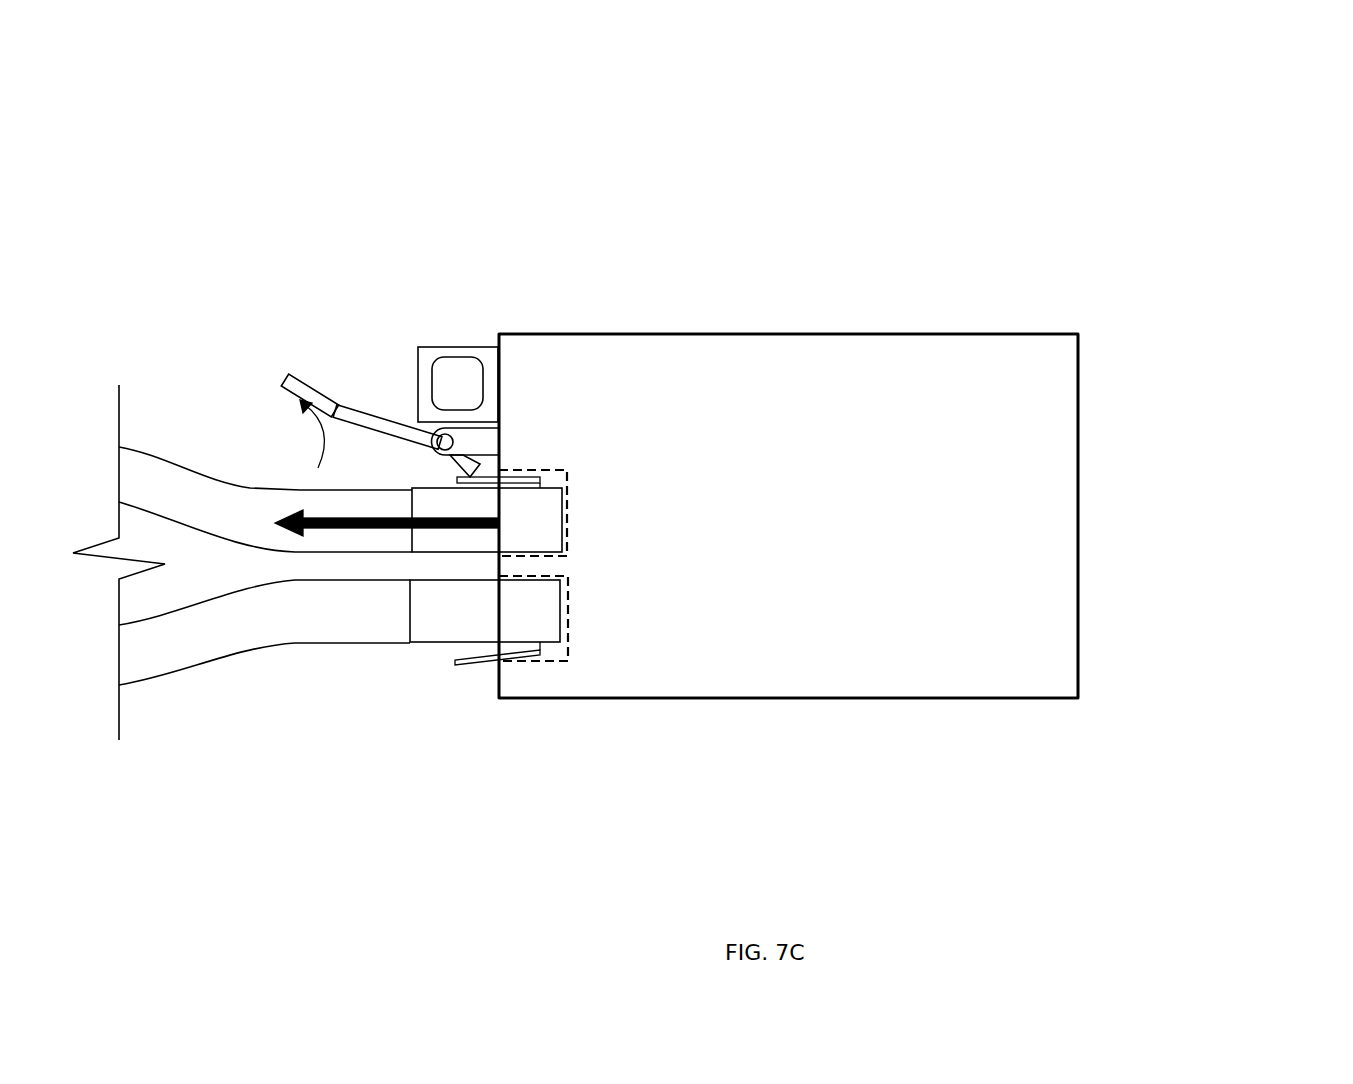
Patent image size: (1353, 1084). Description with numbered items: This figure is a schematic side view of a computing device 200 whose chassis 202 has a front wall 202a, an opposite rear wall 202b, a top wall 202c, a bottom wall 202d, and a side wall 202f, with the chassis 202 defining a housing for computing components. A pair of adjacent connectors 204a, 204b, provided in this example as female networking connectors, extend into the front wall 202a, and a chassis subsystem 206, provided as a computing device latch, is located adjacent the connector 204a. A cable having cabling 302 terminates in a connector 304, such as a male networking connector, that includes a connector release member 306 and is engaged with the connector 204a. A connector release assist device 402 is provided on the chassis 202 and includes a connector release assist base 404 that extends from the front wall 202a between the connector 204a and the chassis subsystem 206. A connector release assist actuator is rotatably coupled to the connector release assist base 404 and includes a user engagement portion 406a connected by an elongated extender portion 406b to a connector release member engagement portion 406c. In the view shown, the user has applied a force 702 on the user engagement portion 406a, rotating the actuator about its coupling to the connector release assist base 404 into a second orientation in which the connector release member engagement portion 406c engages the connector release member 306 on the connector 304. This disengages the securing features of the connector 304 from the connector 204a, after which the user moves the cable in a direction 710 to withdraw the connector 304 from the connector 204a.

The computing device 200 is at (1227, 118).
The computing device chassis 202 is at (1078, 334).
The front wall 202a is at (499, 677).
The rear wall 202b is at (1078, 515).
The top wall 202c is at (788, 334).
The bottom wall 202d is at (788, 698).
The side wall 202f is at (802, 528).
The connector 204a is at (567, 510).
The connector 204b is at (568, 618).
The chassis subsystem 206 is at (462, 346).
The cabling 302 is at (162, 453).
The connector 304 is at (562, 548).
The connector release member 306 is at (482, 475).
The connector release assist device 402 is at (262, 358).
The connector release assist base 404 is at (487, 443).
The user engagement portion 406a is at (287, 373).
The elongated extender portion 406b is at (380, 418).
The connector release member engagement portion 406c is at (457, 462).
The force 702 is at (297, 445).
The direction 710 is at (362, 528).